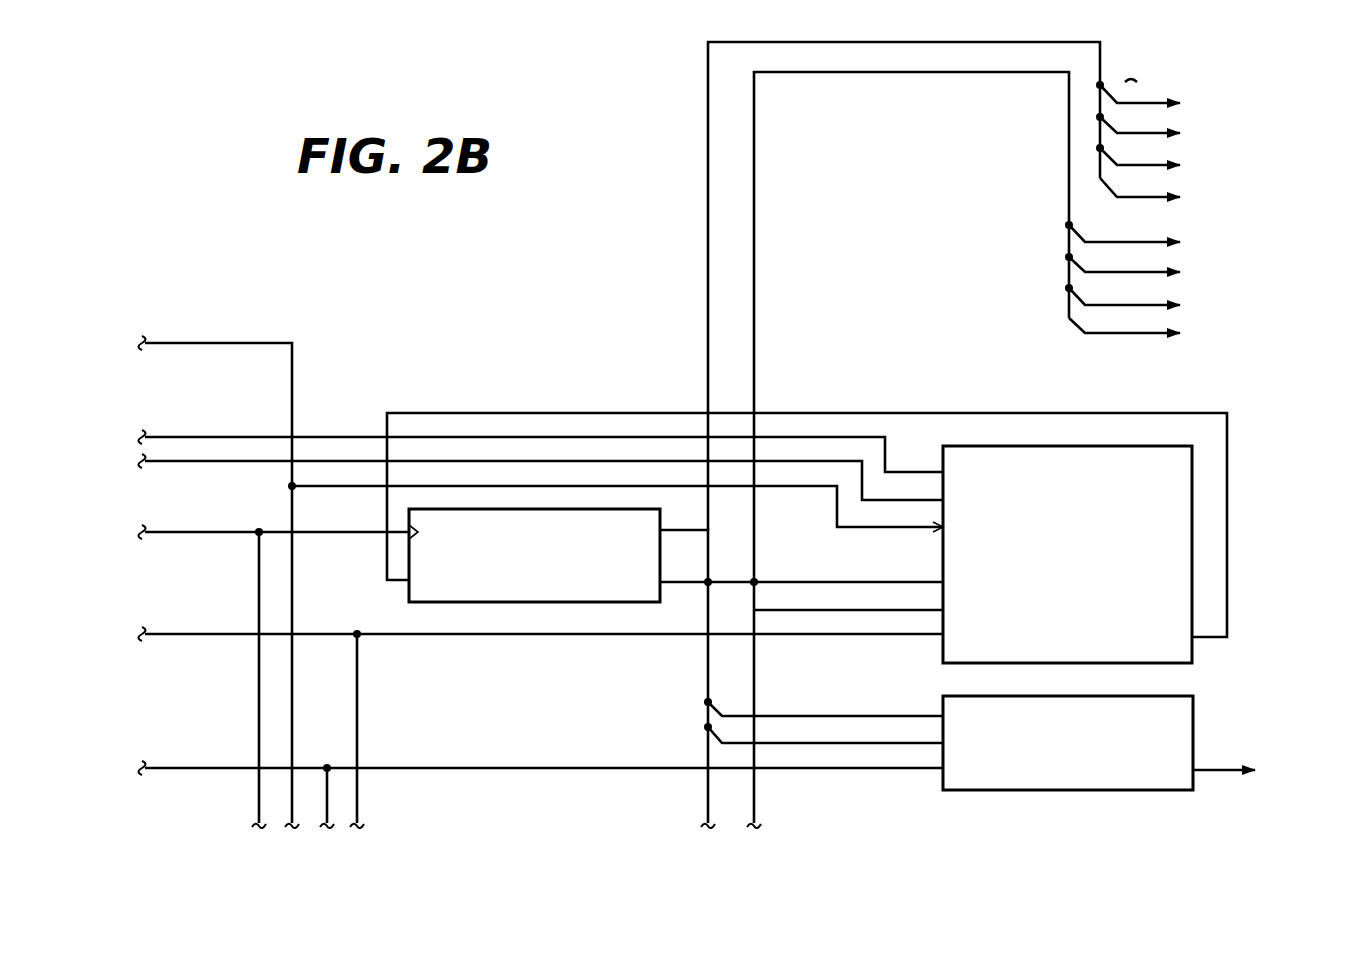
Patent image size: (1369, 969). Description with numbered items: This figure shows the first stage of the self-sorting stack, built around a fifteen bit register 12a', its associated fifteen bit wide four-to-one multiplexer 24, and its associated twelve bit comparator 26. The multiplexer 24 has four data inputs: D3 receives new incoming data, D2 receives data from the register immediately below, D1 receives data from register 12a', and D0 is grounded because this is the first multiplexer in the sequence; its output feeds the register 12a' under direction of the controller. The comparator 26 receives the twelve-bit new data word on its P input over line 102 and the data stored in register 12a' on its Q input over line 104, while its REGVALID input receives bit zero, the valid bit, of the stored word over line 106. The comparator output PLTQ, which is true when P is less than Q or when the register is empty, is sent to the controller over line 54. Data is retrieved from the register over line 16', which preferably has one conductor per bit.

The fifteen bit register 12a' is at (493, 564).
The line 16' is at (1024, 297).
The fifteen bit wide four-to-one multiplexer 24 is at (1190, 488).
The twelve bit comparator 26 is at (1190, 712).
The line 54 is at (1215, 770).
The line 102 is at (701, 772).
The line 104 is at (735, 752).
The line 106 is at (735, 718).